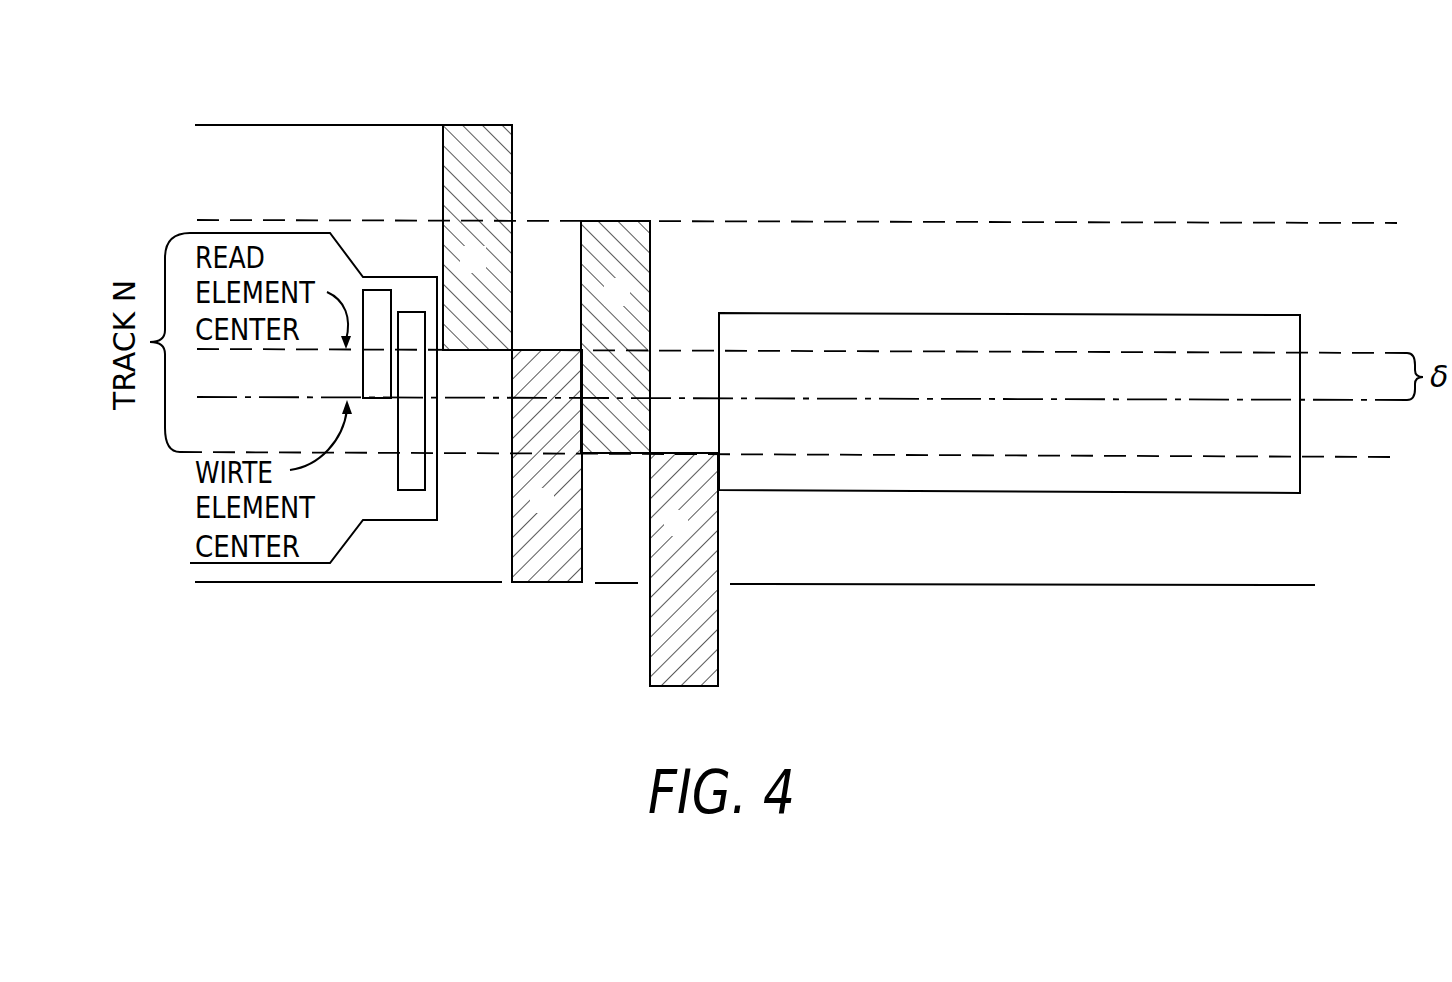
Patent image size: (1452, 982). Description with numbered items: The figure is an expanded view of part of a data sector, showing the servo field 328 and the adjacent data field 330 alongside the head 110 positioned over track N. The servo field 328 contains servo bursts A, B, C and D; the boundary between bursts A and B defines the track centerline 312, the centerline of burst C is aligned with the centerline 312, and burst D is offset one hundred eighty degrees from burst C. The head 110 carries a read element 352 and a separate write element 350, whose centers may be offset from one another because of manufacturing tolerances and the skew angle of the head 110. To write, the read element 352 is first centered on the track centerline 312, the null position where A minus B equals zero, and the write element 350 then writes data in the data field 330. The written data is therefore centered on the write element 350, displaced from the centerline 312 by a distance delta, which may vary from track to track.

The head 110 is at (380, 520).
The track centerline 312 is at (288, 350).
The servo field 328 is at (713, 112).
The data field 330 is at (1295, 115).
The write element 350 is at (411, 490).
The read element 352 is at (378, 290).